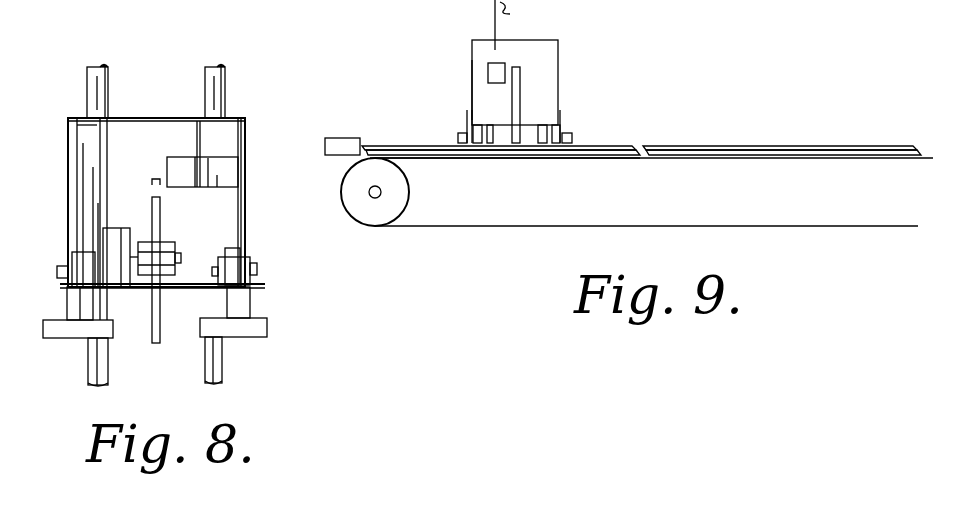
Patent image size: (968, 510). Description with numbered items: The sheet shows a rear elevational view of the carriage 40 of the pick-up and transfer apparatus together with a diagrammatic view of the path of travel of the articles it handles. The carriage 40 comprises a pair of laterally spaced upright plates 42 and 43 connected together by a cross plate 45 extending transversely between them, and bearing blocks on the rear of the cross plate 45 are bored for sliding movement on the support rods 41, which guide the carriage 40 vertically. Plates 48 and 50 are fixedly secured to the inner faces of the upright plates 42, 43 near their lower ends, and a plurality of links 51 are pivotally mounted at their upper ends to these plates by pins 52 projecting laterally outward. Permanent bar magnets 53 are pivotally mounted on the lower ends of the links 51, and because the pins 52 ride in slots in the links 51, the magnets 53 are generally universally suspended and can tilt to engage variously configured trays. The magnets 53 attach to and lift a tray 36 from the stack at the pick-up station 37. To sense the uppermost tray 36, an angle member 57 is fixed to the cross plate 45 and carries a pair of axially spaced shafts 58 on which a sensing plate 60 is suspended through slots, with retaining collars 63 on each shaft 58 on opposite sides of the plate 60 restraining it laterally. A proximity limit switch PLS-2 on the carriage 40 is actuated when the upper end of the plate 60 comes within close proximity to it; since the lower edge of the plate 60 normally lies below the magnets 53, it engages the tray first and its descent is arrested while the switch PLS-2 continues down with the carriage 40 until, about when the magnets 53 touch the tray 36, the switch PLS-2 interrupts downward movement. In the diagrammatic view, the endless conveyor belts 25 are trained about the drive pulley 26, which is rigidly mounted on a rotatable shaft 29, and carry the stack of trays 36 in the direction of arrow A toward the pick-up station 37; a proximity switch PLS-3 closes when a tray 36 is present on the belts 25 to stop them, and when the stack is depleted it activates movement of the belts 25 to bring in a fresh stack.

In FIG. 9, the endless conveyor belts 25 is at (535, 228).
In FIG. 9, the drive pulley 26 is at (400, 178).
In FIG. 9, the rotatable shaft 29 is at (380, 196).
In FIG. 9, the tray 36 is at (573, 164).
In FIG. 9, the tray pick-up station 37 is at (468, 94).
In FIG. 8, the carriage 40 is at (72, 112).
In FIG. 9, the carriage 40 is at (630, 28).
In FIG. 8, the support rods 41 is at (102, 68).
In FIG. 8, the upright plate 42 is at (245, 178).
In FIG. 8, the upright plate 43 is at (77, 173).
In FIG. 8, the cross plate 45 is at (97, 130).
In FIG. 8, the plate 48 is at (232, 252).
In FIG. 8, the plate 50 is at (82, 255).
In FIG. 8, the links 51 is at (88, 300).
In FIG. 8, the pins 52 is at (58, 272).
In FIG. 8, the permanent bar magnets 53 is at (100, 338).
In FIG. 9, the permanent bar magnets 53 is at (462, 144).
In FIG. 8, the angle member 57 is at (110, 228).
In FIG. 8, the shafts 58 is at (182, 258).
In FIG. 8, the sensing plate 60 is at (160, 343).
In FIG. 9, the sensing plate 60 is at (520, 90).
In FIG. 8, the retaining collars 63 is at (150, 244).
In FIG. 9, the arrow A is at (583, 108).
In FIG. 8, the proximity limit switch PLS-2 is at (177, 167).
In FIG. 9, the proximity limit switch PLS-2 is at (488, 70).
In FIG. 9, the proximity switch PLS-3 is at (376, 100).